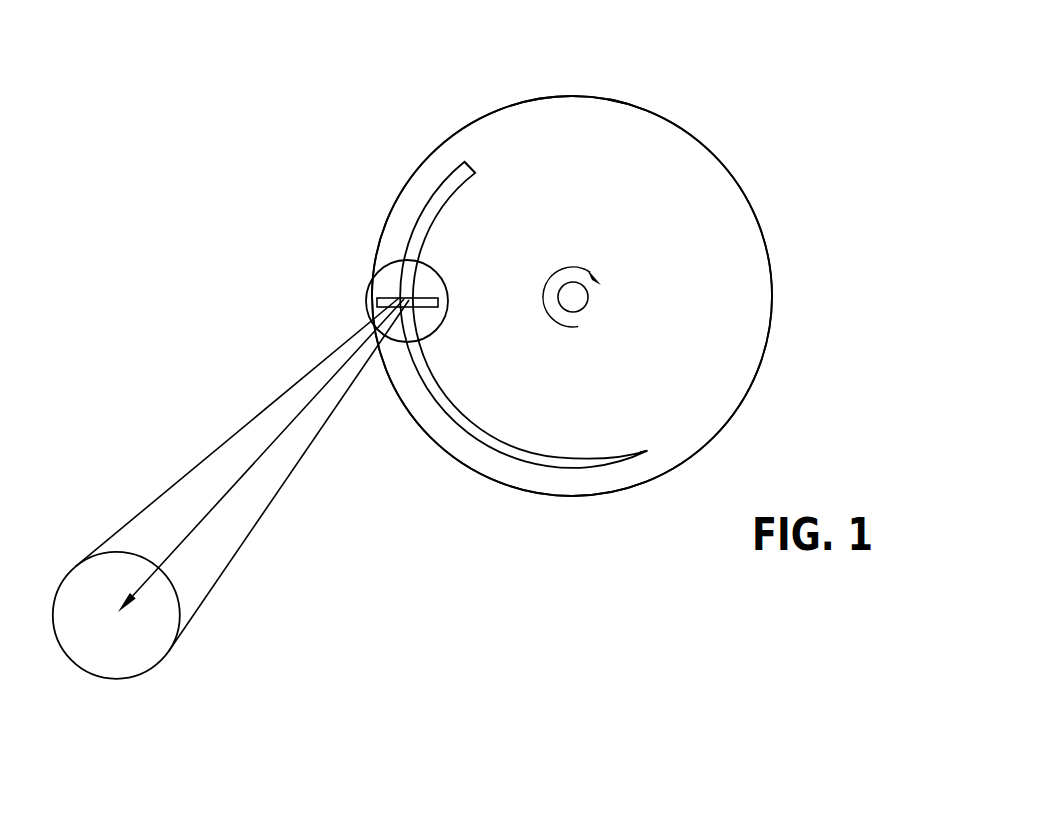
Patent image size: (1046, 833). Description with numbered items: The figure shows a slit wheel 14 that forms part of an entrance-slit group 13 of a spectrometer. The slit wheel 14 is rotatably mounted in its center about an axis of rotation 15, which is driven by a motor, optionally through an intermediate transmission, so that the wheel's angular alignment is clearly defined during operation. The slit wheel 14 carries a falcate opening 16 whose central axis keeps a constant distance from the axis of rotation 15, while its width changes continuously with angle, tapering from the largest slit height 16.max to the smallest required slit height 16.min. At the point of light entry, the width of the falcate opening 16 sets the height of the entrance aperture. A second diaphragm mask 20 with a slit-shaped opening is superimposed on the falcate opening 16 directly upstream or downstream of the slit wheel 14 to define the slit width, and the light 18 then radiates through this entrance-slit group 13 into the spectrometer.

The entrance-slit group 13 is at (687, 82).
The slit wheel 14 is at (558, 97).
The axis of rotation 15 is at (585, 300).
The falcate opening 16 is at (420, 235).
The largest slit height 16.max is at (457, 177).
The smallest required slit height 16.min is at (648, 453).
The light radiating into the spectrometer 18 is at (232, 458).
The second diaphragm mask 20 is at (387, 289).